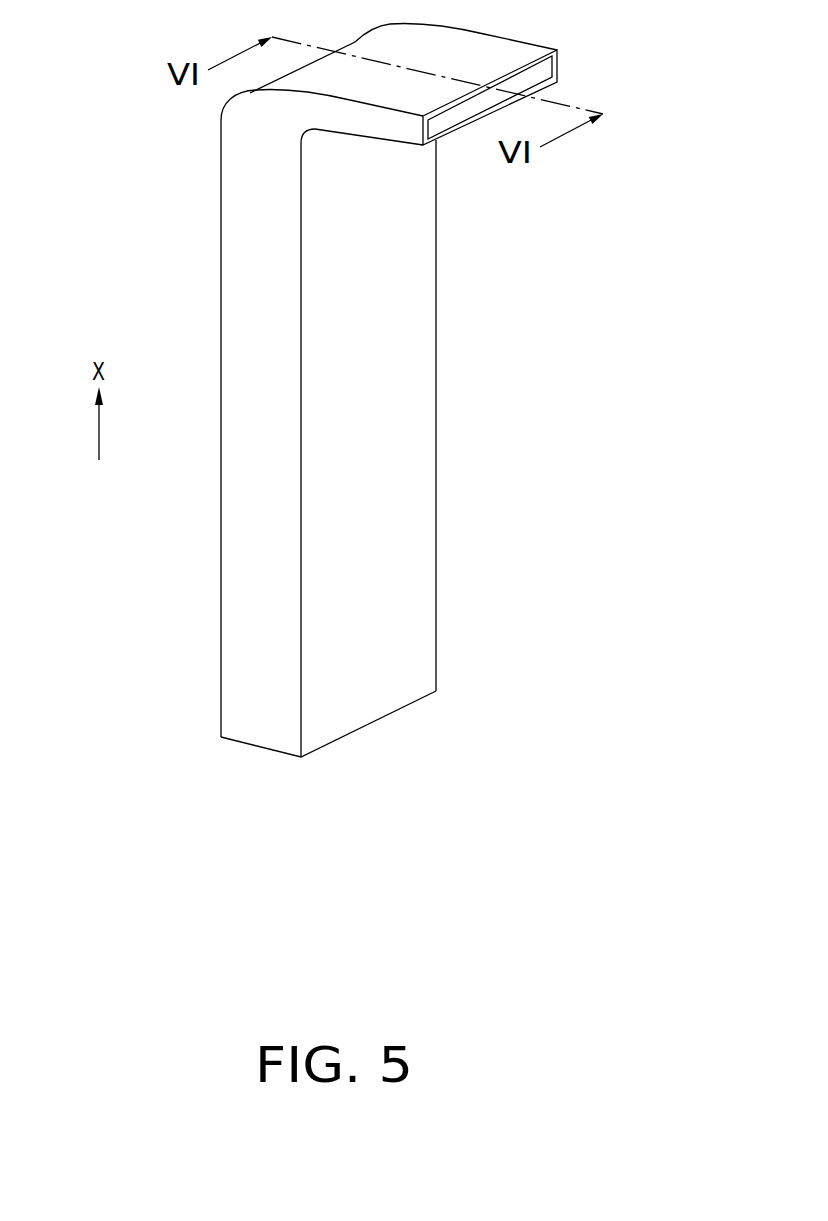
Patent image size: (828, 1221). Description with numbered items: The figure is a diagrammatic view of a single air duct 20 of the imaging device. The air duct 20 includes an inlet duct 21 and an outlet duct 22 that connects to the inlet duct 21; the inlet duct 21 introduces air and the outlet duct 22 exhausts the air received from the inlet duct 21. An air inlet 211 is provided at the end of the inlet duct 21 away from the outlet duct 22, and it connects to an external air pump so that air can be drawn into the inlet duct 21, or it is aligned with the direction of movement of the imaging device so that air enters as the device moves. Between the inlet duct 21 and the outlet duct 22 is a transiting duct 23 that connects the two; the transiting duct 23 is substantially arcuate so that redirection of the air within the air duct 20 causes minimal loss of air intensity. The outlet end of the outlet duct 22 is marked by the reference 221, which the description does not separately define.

The air duct 20 is at (158, 137).
The inlet duct 21 is at (296, 482).
The outlet duct 22 is at (404, 126).
The transiting duct 23 is at (260, 120).
The opening 221 is at (552, 68).
The air inlet 211 is at (255, 752).